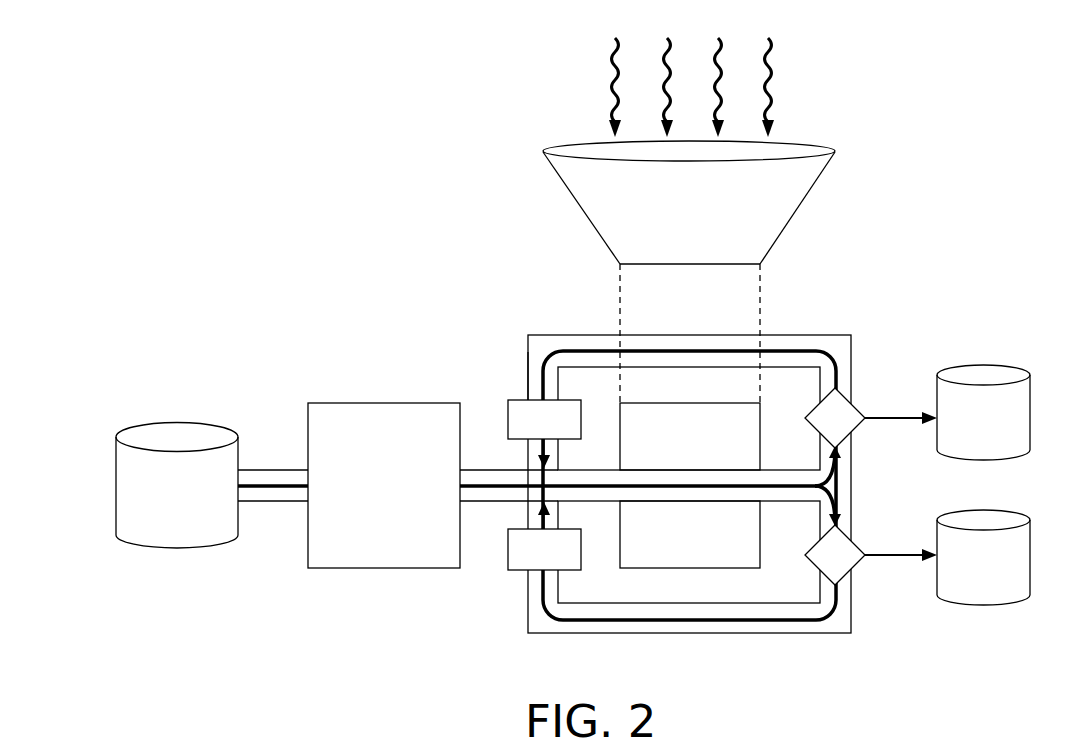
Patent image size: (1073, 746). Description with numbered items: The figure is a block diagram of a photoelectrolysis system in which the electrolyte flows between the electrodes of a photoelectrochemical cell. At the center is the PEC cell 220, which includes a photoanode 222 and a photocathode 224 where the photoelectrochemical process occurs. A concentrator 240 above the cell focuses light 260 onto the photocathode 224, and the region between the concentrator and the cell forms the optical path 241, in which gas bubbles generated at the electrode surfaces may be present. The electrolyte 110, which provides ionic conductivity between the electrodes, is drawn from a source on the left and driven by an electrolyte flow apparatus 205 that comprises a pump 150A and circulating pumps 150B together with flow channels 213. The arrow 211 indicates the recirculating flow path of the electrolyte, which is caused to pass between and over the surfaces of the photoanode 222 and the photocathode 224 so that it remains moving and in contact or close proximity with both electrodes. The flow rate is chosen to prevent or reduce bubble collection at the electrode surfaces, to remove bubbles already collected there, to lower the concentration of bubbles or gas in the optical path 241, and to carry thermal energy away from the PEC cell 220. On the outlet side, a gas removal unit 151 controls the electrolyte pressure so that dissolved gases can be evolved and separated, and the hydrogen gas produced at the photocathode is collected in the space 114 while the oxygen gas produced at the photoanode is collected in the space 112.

The electrolyte flow apparatus 205 is at (870, 621).
The arrow indicating flow path 211 is at (810, 350).
The flow channels 213 is at (527, 352).
The PEC cell 220 is at (741, 394).
The photoanode 222 is at (647, 555).
The photocathode 224 is at (647, 415).
The concentrator 240 is at (800, 208).
The optical path 241 is at (634, 300).
The light 260 is at (773, 89).
The electrolyte 110 is at (178, 422).
The pump 150A is at (384, 402).
The circulating pumps 150B is at (508, 420).
The gas removal unit 151 is at (858, 425).
The space for hydrogen gas 114 is at (1007, 373).
The space for oxygen gas 112 is at (1007, 520).